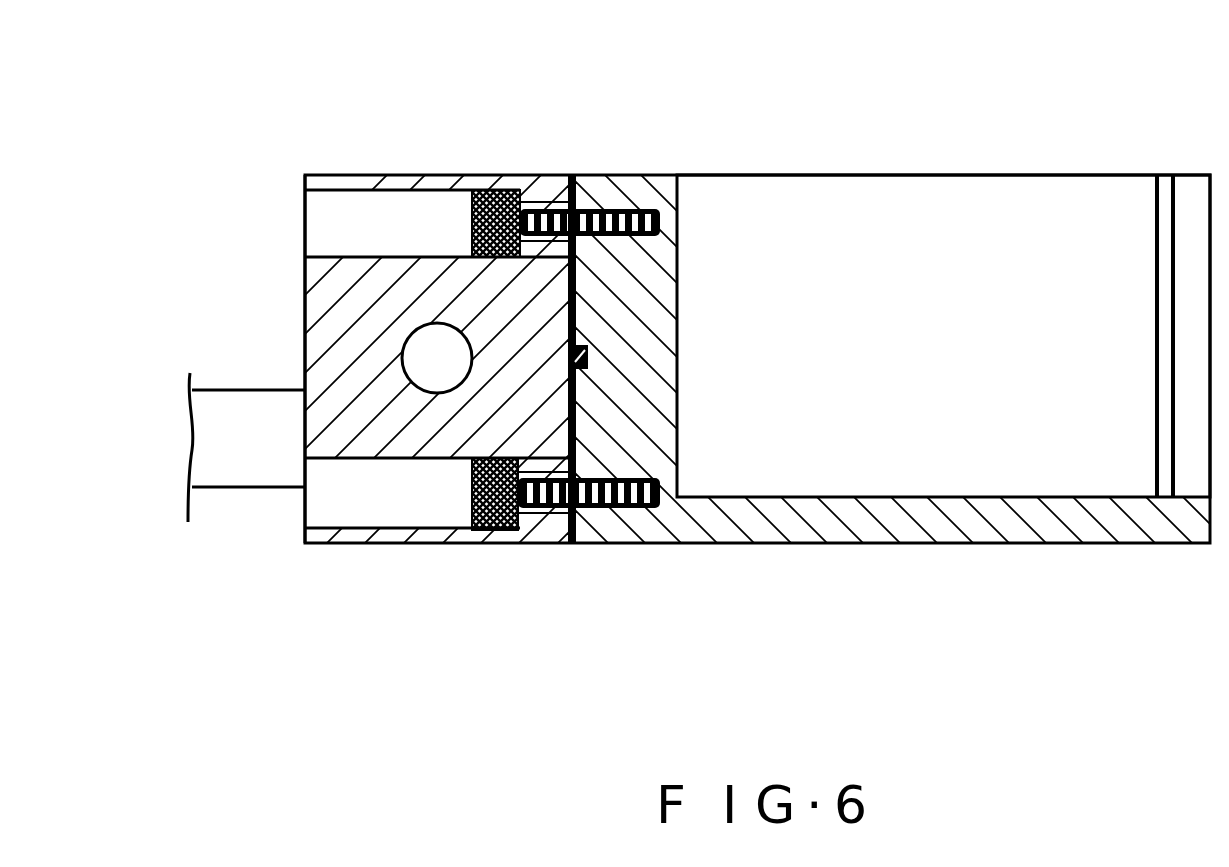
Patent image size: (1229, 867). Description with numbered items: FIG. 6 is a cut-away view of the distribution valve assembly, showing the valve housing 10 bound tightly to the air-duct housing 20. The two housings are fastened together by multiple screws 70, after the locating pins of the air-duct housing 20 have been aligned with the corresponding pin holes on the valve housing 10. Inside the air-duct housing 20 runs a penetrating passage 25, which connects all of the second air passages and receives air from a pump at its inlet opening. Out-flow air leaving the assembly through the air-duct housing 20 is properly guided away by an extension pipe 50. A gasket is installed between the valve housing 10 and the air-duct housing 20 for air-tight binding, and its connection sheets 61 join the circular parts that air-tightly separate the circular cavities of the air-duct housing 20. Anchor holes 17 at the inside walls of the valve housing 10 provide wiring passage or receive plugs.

The valve housing 10 is at (968, 522).
The anchor hole 17 is at (865, 213).
The air-duct housing 20 is at (330, 347).
The penetrating passage 25 is at (433, 350).
The extension pipe 50 is at (238, 487).
The connection sheet 61 is at (581, 372).
The screw 70 is at (610, 205).